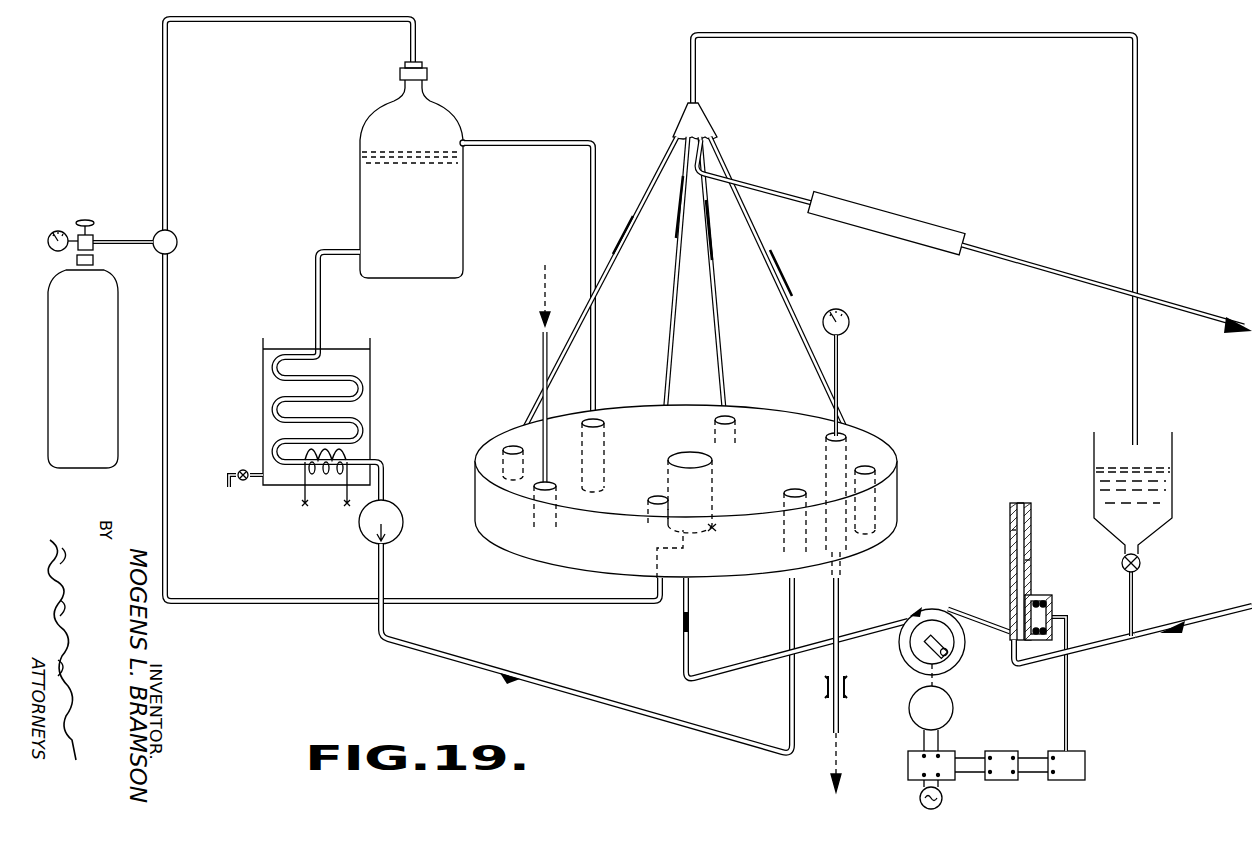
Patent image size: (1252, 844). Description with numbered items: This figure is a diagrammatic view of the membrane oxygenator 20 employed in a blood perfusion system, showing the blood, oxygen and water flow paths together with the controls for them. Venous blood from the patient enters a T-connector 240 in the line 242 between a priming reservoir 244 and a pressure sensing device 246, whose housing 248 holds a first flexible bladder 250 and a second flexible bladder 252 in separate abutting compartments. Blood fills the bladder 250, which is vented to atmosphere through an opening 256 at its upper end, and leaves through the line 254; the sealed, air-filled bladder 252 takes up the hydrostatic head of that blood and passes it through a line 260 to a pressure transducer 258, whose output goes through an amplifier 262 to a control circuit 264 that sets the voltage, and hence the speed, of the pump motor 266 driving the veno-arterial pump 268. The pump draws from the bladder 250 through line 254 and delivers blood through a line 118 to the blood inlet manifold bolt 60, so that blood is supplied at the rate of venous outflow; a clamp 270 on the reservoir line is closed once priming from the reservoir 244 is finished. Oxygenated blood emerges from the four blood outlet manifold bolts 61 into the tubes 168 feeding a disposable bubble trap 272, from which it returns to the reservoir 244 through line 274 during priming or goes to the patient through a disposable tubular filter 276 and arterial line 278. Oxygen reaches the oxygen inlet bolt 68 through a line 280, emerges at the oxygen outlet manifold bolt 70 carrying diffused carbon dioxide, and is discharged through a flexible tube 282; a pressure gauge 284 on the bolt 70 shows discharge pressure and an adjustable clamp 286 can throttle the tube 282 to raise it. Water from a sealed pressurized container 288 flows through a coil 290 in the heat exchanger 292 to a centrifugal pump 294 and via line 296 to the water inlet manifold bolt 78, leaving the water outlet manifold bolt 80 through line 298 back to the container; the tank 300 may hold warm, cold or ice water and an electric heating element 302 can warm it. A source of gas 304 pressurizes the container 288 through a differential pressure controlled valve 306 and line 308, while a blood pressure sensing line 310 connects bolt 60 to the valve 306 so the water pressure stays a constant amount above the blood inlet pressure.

The platform 20 is at (462, 482).
The blood inlet manifold bolt 60 is at (713, 533).
The blood outlet manifold bolts 61 is at (508, 446).
The oxygen inlet bolt 68 is at (549, 484).
The oxygen outlet manifold bolt 70 is at (826, 437).
The water inlet manifold bolt 78 is at (790, 491).
The water outlet manifold bolt 80 is at (598, 420).
The line 118 is at (680, 620).
The tubes 168 is at (604, 290).
The T-connector 240 is at (1136, 641).
The line 242 is at (1105, 650).
The priming reservoir 244 is at (1173, 482).
The pressure sensing device 246 is at (1000, 517).
The housing 248 is at (1010, 544).
The first flexible bladder 250 is at (1010, 563).
The second flexible bladder 252 is at (1036, 596).
The line 254 is at (993, 625).
The opening 256 is at (1021, 504).
The pressure transducer 258 is at (1068, 782).
The line 260 is at (1070, 636).
The amplifier 262 is at (990, 782).
The control circuit 264 is at (908, 767).
The pump motor 266 is at (908, 712).
The veno-arterial pump 268 is at (902, 648).
The clamp 270 is at (1141, 563).
The disposable bubble trap 272 is at (708, 119).
The line 274 is at (978, 42).
The disposable tubular filter 276 is at (888, 222).
The arterial line 278 is at (1026, 266).
The line 280 is at (541, 358).
The flexible tube 282 is at (842, 594).
The pressure gauge 284 is at (851, 322).
The adjustable clamp 286 is at (846, 687).
The sealed pressurized container 288 is at (356, 190).
The coil 290 is at (272, 404).
The heat exchanger 292 is at (252, 369).
The centrifugal pump 294 is at (398, 538).
The line 296 is at (562, 690).
The line 298 is at (590, 172).
The tank 300 is at (266, 429).
The electric heating element 302 is at (304, 474).
The source of gas 304 is at (72, 466).
The differential pressure controlled valve 306 is at (160, 224).
The line 308 is at (170, 161).
The blood pressure sensing line 310 is at (256, 604).